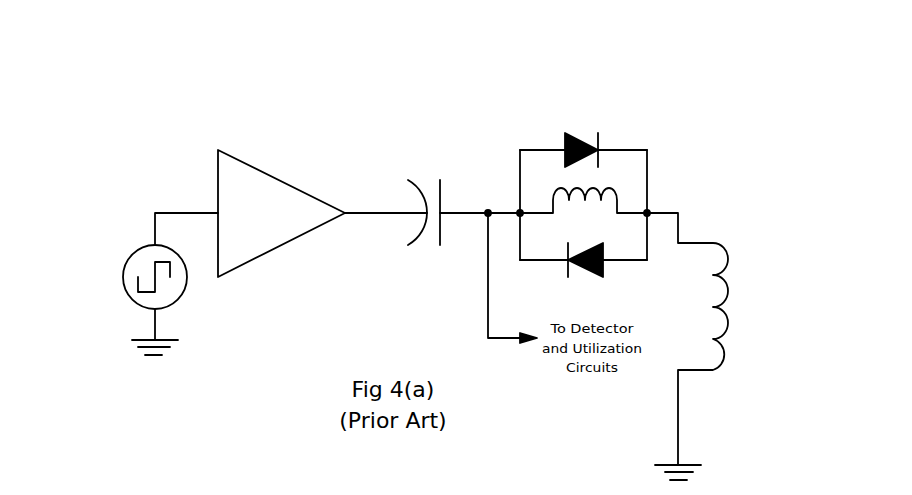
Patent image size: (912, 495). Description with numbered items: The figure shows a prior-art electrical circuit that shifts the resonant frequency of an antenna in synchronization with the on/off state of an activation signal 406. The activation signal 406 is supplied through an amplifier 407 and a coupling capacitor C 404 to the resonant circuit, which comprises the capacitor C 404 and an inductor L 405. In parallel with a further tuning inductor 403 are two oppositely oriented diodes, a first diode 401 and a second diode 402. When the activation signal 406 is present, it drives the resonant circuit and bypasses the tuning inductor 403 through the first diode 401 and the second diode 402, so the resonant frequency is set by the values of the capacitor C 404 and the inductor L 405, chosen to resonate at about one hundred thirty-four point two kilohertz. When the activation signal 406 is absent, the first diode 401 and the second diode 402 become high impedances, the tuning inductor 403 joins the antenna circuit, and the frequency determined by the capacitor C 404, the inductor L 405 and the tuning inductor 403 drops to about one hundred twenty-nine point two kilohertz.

The diode D1 401 is at (590, 118).
The diode D2 402 is at (555, 270).
The inductor LT 403 is at (628, 183).
The capacitor C 404 is at (423, 168).
The inductor L 405 is at (740, 262).
The activation signal 406 is at (122, 252).
The amplifier A 407 is at (282, 167).